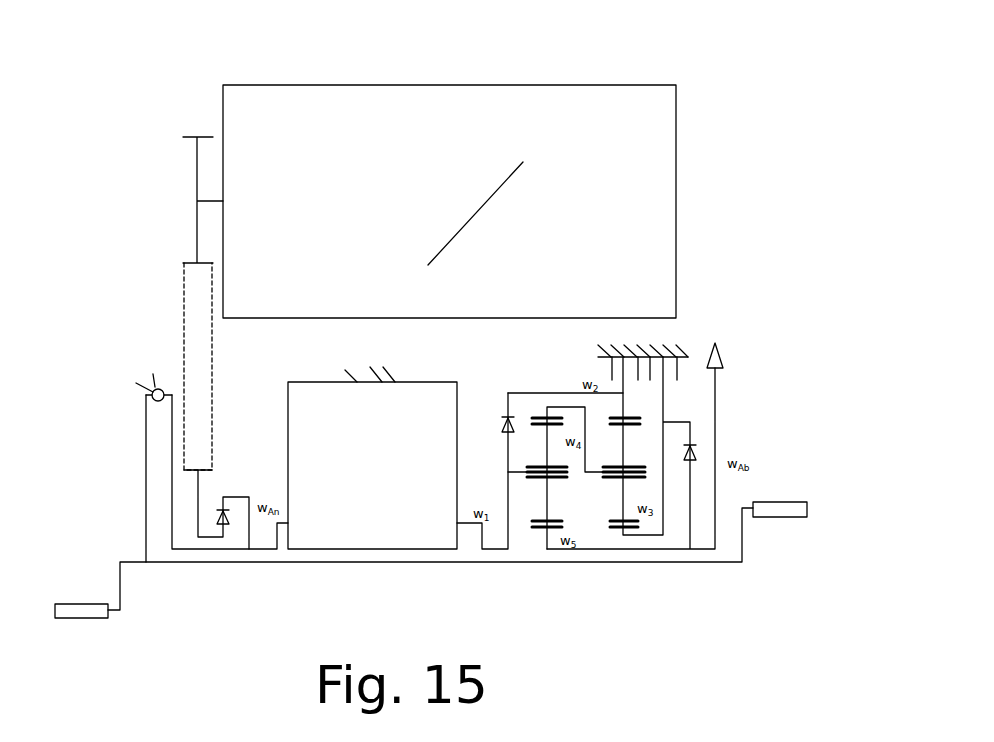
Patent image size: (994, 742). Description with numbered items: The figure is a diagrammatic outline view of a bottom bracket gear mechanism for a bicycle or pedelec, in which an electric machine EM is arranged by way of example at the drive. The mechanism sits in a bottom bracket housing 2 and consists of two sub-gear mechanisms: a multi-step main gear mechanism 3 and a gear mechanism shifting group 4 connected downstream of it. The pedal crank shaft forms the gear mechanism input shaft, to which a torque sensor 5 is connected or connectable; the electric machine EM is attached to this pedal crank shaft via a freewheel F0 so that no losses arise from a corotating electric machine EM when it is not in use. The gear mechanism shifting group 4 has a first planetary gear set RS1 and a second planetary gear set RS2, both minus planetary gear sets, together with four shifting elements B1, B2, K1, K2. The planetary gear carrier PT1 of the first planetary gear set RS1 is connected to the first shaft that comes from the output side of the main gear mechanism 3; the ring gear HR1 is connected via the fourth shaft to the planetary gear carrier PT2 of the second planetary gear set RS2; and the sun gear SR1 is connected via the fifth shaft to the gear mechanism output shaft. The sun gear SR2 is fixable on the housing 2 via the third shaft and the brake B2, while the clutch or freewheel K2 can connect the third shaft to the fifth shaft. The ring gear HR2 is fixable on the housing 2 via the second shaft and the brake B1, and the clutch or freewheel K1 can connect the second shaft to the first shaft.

The bottom bracket housing 2 is at (670, 350).
The main gear mechanism 3 is at (328, 413).
The gear mechanism shifting group 4 is at (565, 392).
The torque sensor 5 is at (150, 392).
The electric machine EM is at (449, 201).
The freewheel F0 is at (230, 499).
The fifth shifting element K1 is at (491, 428).
The sixth shifting element K2 is at (694, 427).
The first shifting element B1 is at (626, 332).
The second shifting element B2 is at (665, 332).
The ring gear of the first planetary gear set HR1 is at (540, 416).
The ring gear of the second planetary gear set HR2 is at (632, 417).
The planetary gear carrier of the first planetary gear set PT1 is at (528, 473).
The planetary gear carrier of the second planetary gear set PT2 is at (595, 473).
The sun gear of the first planetary gear set SR1 is at (525, 609).
The sun gear of the second planetary gear set SR2 is at (632, 528).
The first planetary gear set RS1 is at (542, 527).
The second planetary gear set RS2 is at (635, 582).